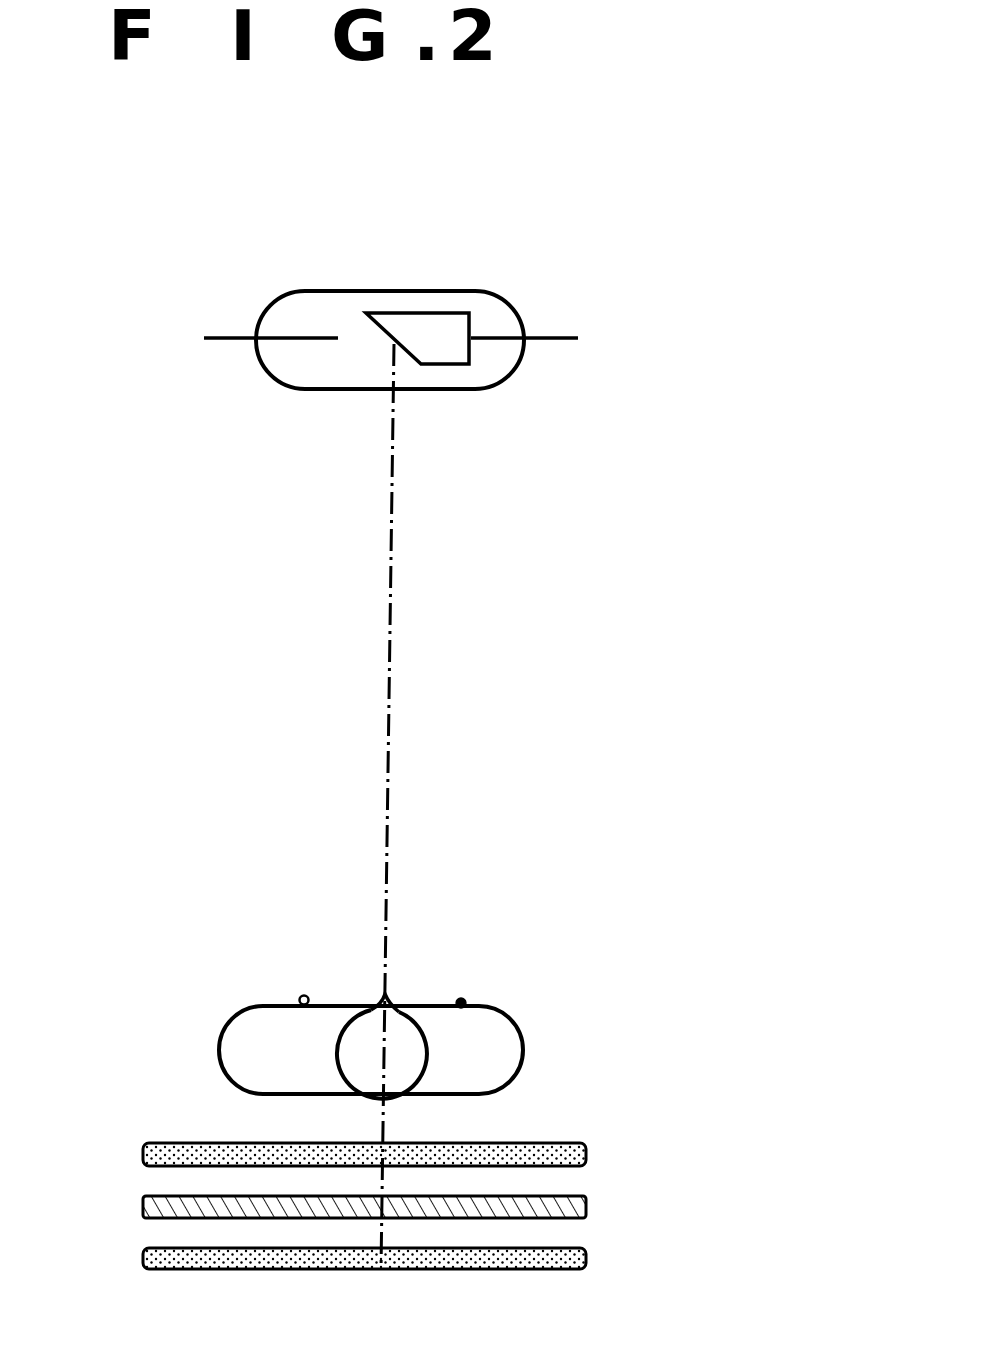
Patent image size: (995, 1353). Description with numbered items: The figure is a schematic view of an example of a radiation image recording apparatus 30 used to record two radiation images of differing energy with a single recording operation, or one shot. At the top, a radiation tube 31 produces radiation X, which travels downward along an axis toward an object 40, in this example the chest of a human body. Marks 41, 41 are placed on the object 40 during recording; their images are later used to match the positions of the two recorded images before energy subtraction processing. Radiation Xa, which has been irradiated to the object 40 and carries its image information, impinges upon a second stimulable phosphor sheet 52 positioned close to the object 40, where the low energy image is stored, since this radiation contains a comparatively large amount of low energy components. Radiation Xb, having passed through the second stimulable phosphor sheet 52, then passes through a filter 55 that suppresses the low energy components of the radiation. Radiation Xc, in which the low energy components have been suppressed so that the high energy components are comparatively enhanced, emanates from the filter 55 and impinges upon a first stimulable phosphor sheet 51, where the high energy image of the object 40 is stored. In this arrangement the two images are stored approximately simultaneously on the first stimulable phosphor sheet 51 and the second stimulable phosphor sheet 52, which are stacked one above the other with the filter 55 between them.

The radiation image recording apparatus 30 is at (684, 419).
The radiation tube 31 is at (481, 290).
The object 40 is at (493, 1035).
The marks 41 is at (300, 992).
The first stimulable phosphor sheet 51 is at (585, 1254).
The second stimulable phosphor sheet 52 is at (585, 1140).
The filter 55 is at (585, 1203).
The radiation X is at (391, 512).
The radiation Xa is at (383, 1124).
The radiation Xb is at (380, 1177).
The radiation Xc is at (383, 1227).